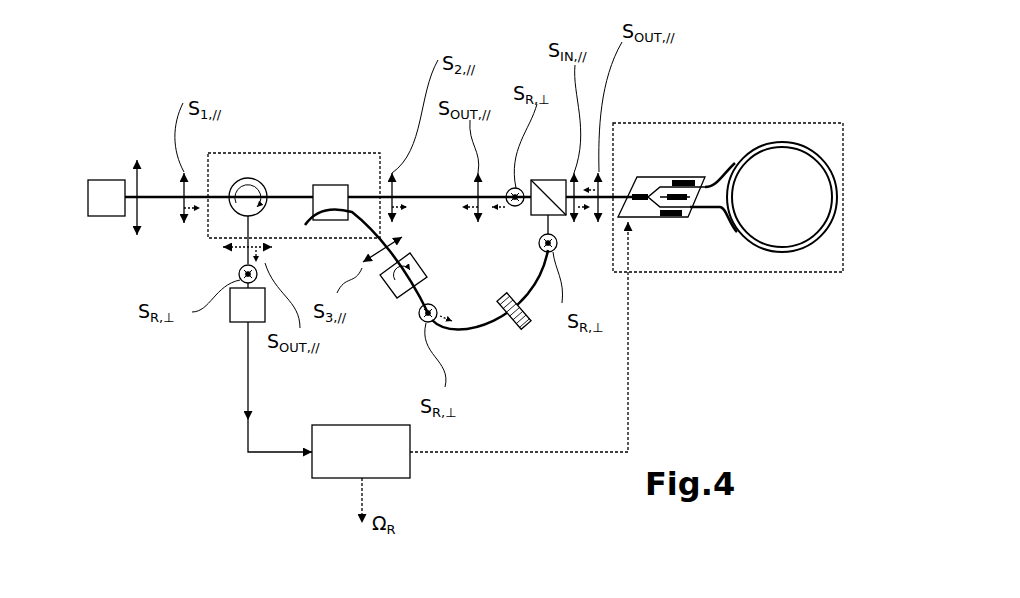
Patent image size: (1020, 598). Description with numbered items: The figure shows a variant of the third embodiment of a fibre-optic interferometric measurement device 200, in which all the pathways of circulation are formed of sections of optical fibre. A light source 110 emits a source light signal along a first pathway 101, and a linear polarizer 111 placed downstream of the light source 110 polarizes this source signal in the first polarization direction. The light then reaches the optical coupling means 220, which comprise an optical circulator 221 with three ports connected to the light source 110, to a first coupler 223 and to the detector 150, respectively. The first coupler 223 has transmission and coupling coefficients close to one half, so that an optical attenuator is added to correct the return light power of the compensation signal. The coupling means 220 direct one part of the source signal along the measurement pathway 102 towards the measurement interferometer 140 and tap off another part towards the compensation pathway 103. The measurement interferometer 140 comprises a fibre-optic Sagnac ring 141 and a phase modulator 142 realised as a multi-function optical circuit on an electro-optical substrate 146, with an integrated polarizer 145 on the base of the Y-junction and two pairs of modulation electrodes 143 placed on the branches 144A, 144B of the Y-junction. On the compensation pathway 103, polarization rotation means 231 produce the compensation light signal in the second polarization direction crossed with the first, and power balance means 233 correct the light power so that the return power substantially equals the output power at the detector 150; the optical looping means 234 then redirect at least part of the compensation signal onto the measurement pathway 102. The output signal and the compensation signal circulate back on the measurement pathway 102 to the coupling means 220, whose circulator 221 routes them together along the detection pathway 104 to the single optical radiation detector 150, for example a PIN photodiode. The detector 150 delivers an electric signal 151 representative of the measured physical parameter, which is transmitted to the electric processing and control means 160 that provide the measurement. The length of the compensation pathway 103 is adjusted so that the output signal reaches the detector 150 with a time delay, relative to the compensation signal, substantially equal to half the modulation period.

The light source 110 is at (105, 180).
The pathway of circulation 101 is at (162, 197).
The linear polarizer 111 is at (135, 234).
The optical coupling means 220 is at (297, 152).
The optical circulator 221 is at (248, 178).
The detection pathway 104 is at (242, 265).
The optical radiation detector 150 is at (229, 307).
The electric signal 151 is at (245, 420).
The electric processing and control means 160 is at (333, 479).
The interferometric measurement device 200 is at (157, 490).
The first coupler / optical attenuator 223 is at (340, 184).
The polarization rotation means 231 is at (383, 290).
The measurement pathway 102 is at (436, 201).
The compensation pathway 103 is at (463, 333).
The power balance means 233 is at (541, 332).
The optical looping means 234 is at (548, 180).
The measurement interferometer 140 is at (787, 276).
The electro-optical substrate 146 is at (653, 178).
The integrated polarizer 145 is at (633, 222).
The branch of the Y-junction 144A is at (668, 181).
The branch of the Y-junction 144B is at (662, 216).
The phase modulator 142 is at (700, 178).
The modulation electrodes 143 is at (705, 210).
The fibre-optic Sagnac ring 141 is at (782, 142).